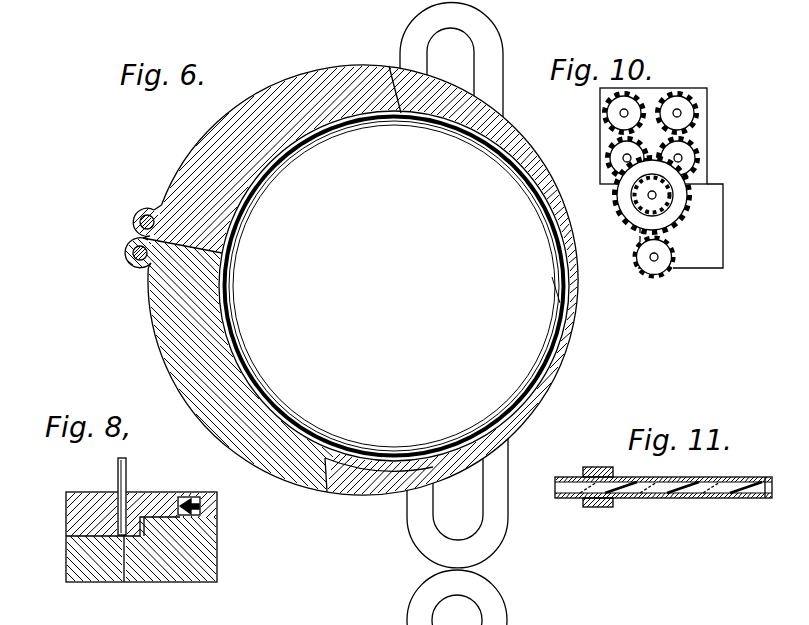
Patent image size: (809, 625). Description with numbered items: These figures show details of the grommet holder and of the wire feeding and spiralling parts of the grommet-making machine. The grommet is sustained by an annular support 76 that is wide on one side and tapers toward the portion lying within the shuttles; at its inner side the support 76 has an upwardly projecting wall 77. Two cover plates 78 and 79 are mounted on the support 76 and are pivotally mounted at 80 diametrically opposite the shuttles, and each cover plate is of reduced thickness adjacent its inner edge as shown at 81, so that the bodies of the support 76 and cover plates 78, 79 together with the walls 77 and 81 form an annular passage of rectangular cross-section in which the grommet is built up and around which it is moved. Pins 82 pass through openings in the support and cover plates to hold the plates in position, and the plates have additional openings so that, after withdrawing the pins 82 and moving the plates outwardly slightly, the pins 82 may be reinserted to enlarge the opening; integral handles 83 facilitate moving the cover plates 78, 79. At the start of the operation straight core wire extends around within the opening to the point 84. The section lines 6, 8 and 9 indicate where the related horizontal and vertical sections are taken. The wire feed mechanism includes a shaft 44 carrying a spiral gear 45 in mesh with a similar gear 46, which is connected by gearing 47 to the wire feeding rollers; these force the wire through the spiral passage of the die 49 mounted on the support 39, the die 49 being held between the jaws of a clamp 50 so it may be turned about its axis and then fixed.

In FIG. 8, the section line 6— 6 is at (20, 500).
In FIG. 6, the section line 8— 8 is at (390, 66).
In FIG. 6, the section line 9— 9 is at (399, 583).
In FIG. 10, the support 39 is at (712, 215).
In FIG. 10, the shaft 44 is at (656, 258).
In FIG. 10, the spiral gear 45 is at (647, 277).
In FIG. 10, the spiral gear 46 is at (615, 210).
In FIG. 10, the gearing 47 is at (639, 105).
In FIG. 11, the die 49 is at (558, 478).
In FIG. 11, the clamp 50 is at (612, 505).
In FIG. 8, the support 76 is at (202, 567).
In FIG. 8, the upwardly projecting wall 77 is at (217, 513).
In FIG. 6, the cover plate 78 is at (180, 349).
In FIG. 6, the cover plate 79 is at (202, 150).
In FIG. 6, the pivot 80 is at (126, 250).
In FIG. 8, the reduced-thickness portion 81 is at (210, 492).
In FIG. 6, the pin 82 is at (401, 113).
In FIG. 8, the pin 82 is at (116, 470).
In FIG. 6, the handle 83 is at (487, 33).
In FIG. 6, the end point of straight wire 84 is at (238, 222).